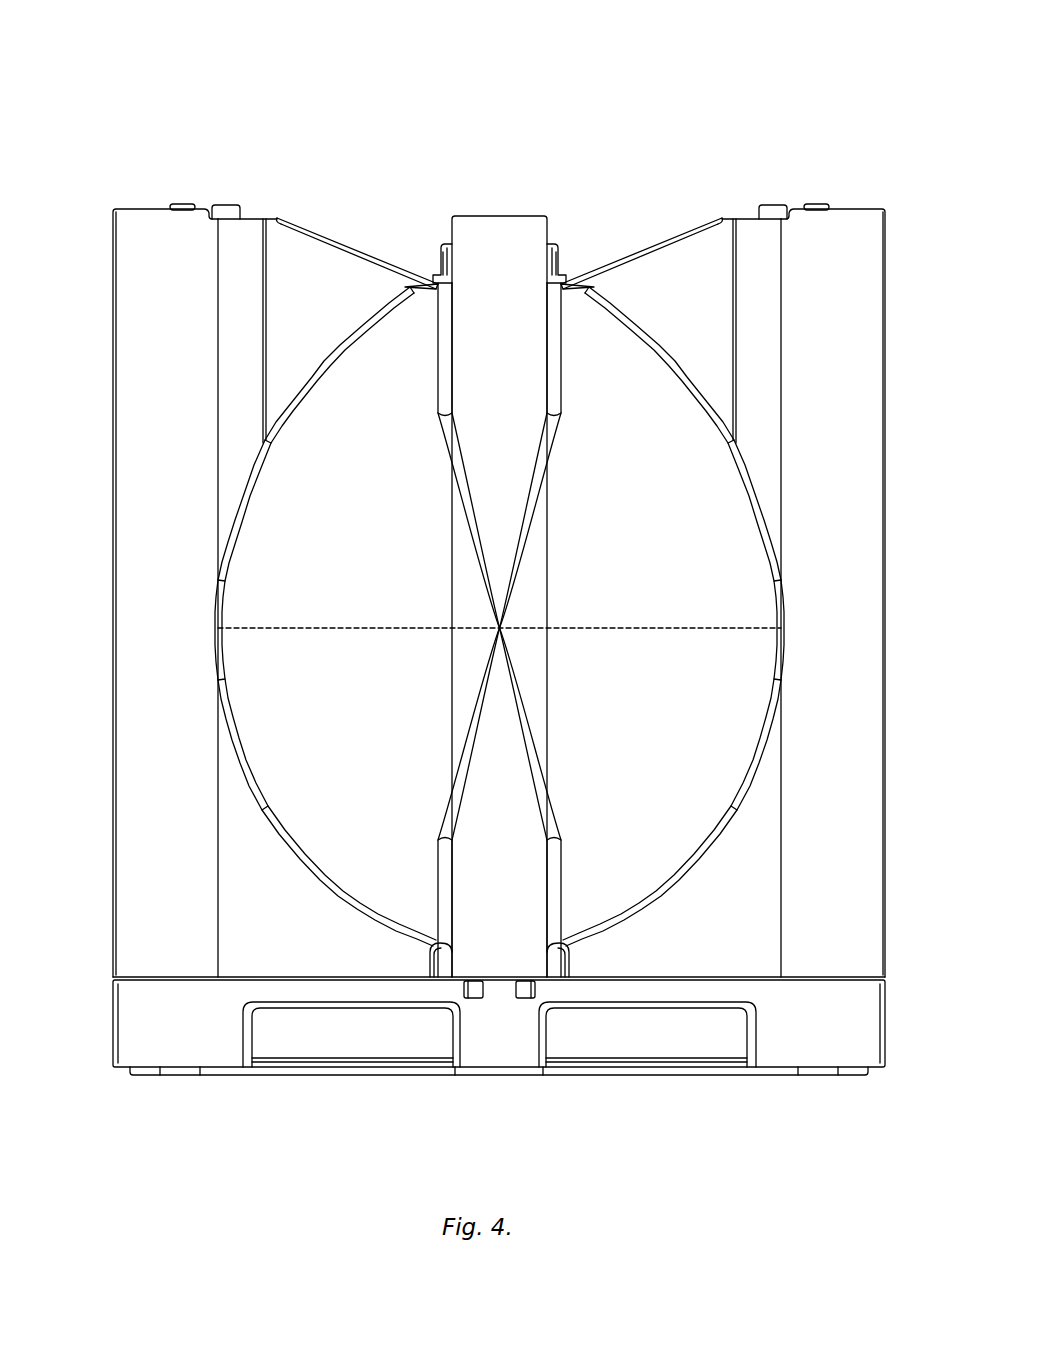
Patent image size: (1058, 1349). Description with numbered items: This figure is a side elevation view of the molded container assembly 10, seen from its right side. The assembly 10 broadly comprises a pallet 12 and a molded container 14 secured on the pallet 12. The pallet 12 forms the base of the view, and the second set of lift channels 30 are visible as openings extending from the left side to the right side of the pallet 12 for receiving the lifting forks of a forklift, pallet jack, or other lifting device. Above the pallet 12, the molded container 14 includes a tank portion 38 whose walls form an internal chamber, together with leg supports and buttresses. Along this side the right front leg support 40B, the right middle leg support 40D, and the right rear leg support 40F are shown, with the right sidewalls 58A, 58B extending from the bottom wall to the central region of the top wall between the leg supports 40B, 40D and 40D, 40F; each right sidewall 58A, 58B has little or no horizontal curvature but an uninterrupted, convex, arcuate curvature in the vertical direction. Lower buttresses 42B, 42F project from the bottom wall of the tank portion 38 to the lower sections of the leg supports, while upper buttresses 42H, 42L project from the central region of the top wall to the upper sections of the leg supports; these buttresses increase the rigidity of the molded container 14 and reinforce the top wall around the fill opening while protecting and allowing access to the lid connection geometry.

The molded container assembly 10 is at (383, 72).
The pallet 12 is at (98, 1063).
The molded container 14 is at (103, 773).
The second set of lift channels 30 is at (338, 1048).
The tank portion 38 is at (403, 338).
The right front leg support 40B is at (103, 552).
The right middle leg support 40D is at (430, 478).
The right rear leg support 40F is at (905, 478).
The right front lower buttress 42B is at (250, 893).
The right rear lower buttress 42F is at (755, 903).
The right front upper buttress 42H is at (290, 265).
The right rear upper buttress 42L is at (695, 265).
The right sidewall 58A is at (280, 518).
The right sidewall 58B is at (740, 592).